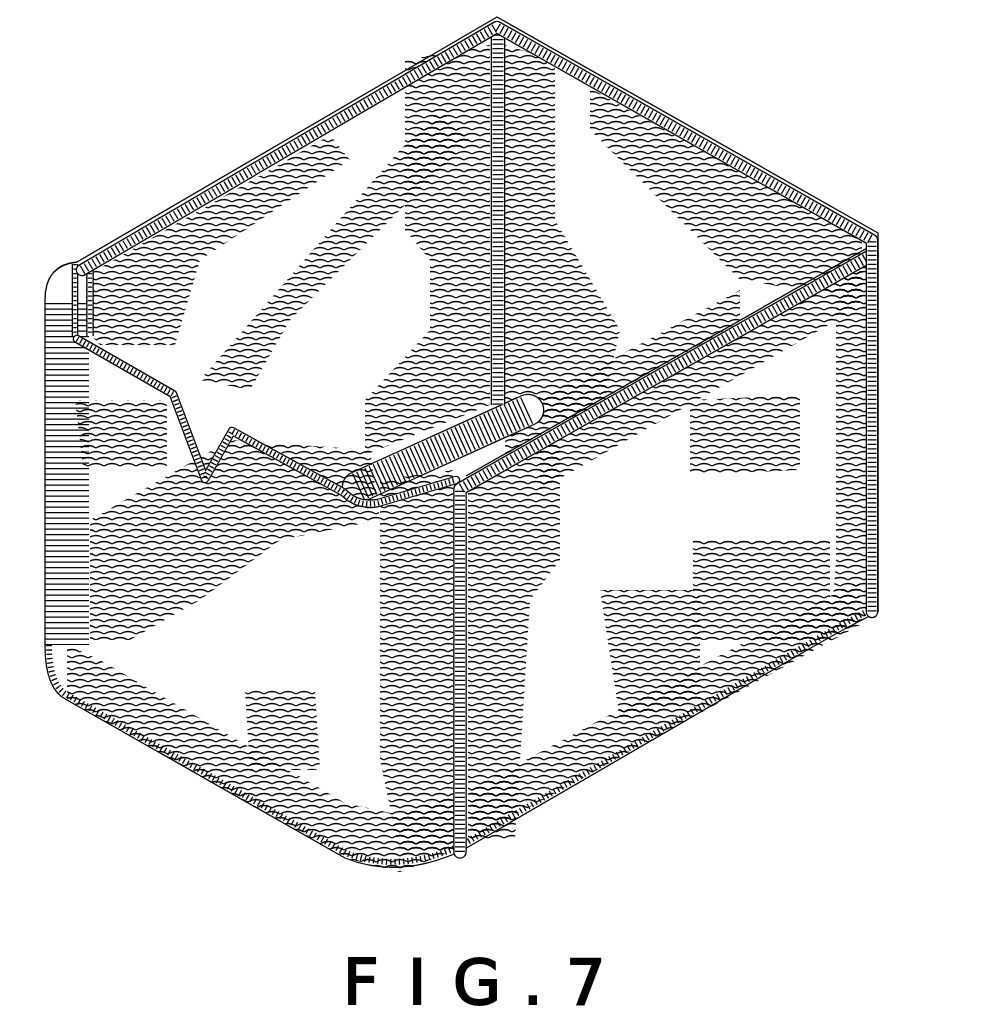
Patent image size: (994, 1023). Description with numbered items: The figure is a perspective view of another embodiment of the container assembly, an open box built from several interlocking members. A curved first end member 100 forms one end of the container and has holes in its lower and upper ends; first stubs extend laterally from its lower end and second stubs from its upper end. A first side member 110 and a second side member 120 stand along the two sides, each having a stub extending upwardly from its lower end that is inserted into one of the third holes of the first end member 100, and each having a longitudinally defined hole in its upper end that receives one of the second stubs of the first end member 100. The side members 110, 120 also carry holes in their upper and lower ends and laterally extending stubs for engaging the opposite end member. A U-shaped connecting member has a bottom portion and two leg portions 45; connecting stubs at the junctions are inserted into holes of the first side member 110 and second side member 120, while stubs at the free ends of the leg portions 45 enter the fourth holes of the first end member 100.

The leg portions 45 is at (218, 180).
The first end member 100 is at (236, 742).
The first side member 110 is at (645, 708).
The second side member 120 is at (320, 185).